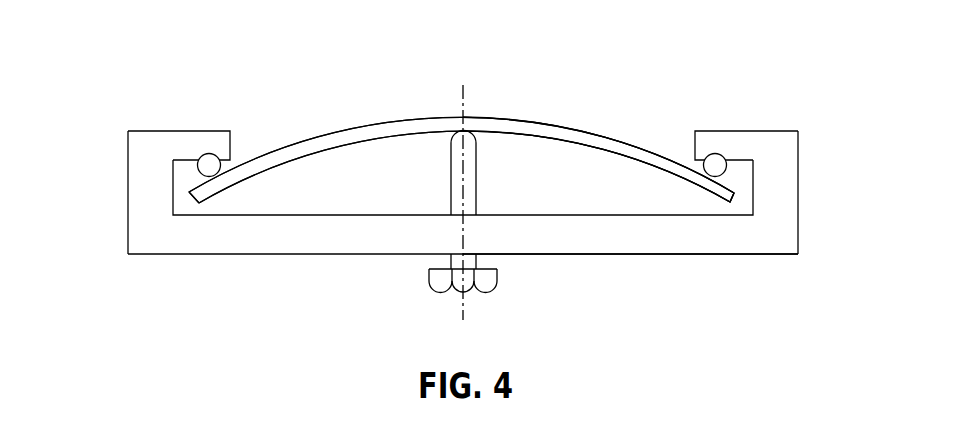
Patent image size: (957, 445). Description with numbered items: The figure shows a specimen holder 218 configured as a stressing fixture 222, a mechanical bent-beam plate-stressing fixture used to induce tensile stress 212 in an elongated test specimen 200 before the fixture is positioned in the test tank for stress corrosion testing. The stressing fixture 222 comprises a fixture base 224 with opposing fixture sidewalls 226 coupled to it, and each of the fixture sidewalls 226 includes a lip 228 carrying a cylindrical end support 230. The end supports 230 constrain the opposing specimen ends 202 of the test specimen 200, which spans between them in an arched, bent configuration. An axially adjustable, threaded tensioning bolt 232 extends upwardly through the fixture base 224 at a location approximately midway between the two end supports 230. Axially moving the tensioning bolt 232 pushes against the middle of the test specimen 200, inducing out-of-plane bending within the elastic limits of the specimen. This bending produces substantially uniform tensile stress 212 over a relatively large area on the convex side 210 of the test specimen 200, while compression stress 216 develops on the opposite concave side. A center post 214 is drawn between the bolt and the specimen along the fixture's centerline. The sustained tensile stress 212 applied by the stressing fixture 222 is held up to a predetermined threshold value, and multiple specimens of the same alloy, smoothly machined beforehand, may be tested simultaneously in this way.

The test specimen 200 is at (317, 137).
The specimen ends 202 is at (210, 194).
The convex side 210 is at (515, 119).
The tensile stress 212 is at (568, 126).
The center post 214 is at (519, 134).
The compression stress 216 is at (593, 148).
The specimen holder 218 is at (218, 257).
The stressing fixture 222 is at (653, 248).
The fixture base 224 is at (290, 248).
The fixture sidewalls 226 is at (138, 192).
The lip 228 is at (155, 130).
The cylindrical end support 230 is at (199, 153).
The tensioning bolt 232 is at (497, 278).